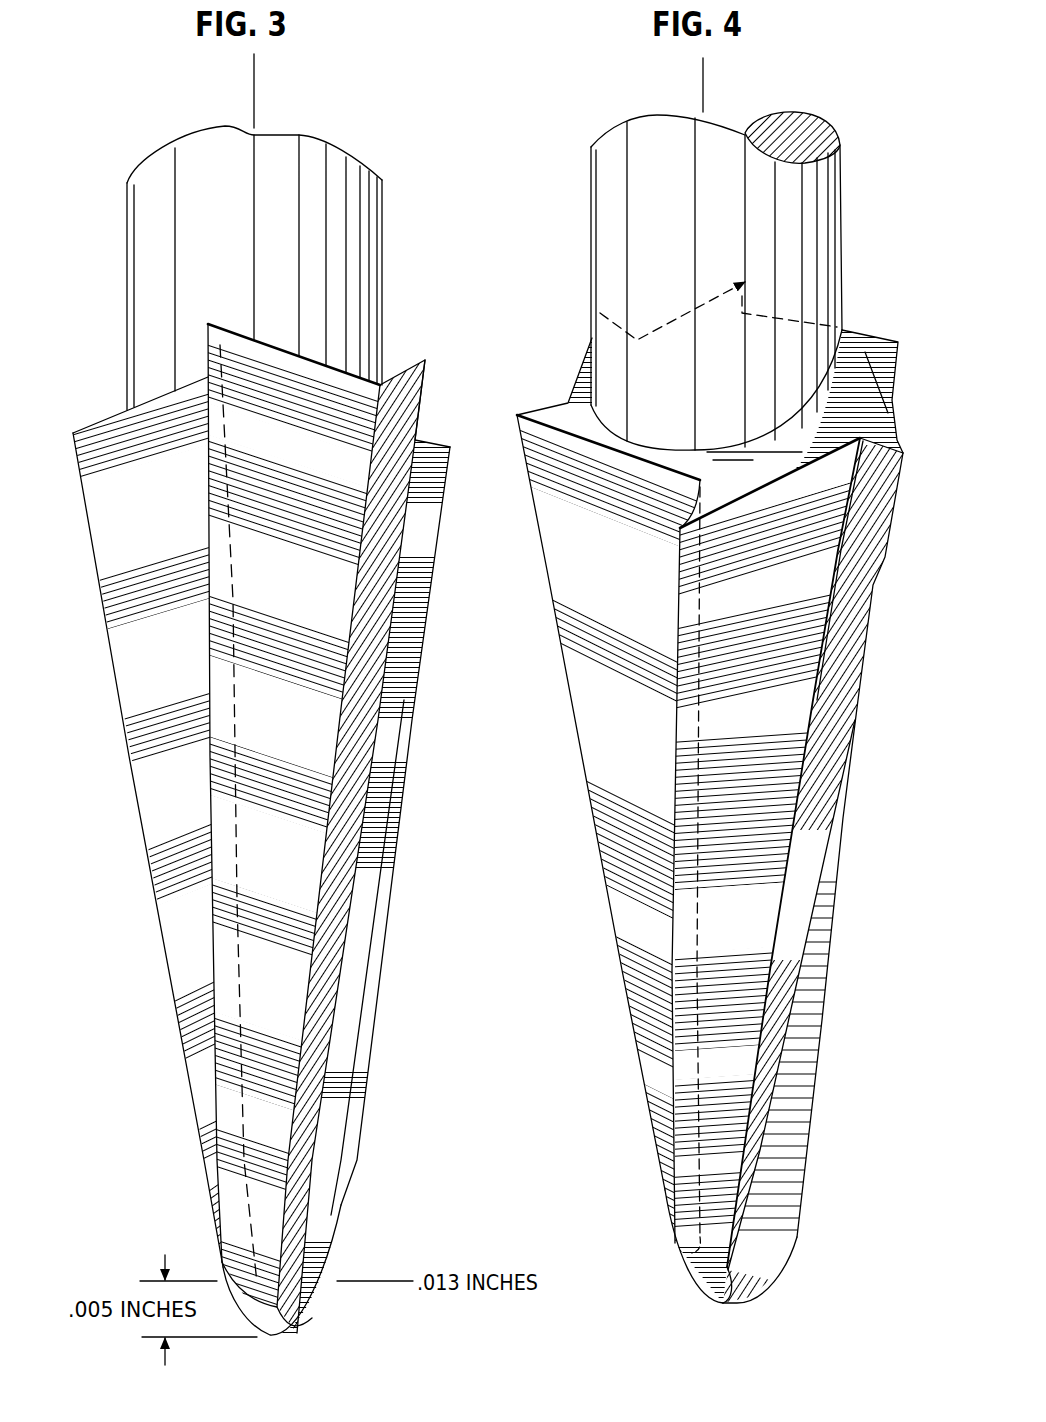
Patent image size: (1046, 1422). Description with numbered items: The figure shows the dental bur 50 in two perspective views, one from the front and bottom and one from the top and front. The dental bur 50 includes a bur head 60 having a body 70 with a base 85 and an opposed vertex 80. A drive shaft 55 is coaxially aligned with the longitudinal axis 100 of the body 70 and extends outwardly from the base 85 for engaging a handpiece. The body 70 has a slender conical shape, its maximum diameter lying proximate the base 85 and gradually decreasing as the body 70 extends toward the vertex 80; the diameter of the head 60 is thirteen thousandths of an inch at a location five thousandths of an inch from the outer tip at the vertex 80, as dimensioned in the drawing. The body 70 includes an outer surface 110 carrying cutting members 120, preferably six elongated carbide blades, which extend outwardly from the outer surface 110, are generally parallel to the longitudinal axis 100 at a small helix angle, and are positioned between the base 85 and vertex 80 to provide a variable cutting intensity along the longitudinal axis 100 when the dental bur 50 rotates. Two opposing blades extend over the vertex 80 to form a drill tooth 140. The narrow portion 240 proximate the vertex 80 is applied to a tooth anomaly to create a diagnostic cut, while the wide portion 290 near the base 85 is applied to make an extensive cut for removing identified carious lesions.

In FIG. 3, the dental bur 50 is at (403, 284).
In FIG. 4, the dental bur 50 is at (887, 323).
In FIG. 3, the drive shaft 55 is at (270, 178).
In FIG. 4, the drive shaft 55 is at (805, 235).
In FIG. 3, the bur head 60 is at (420, 876).
In FIG. 4, the bur head 60 is at (853, 843).
In FIG. 4, the body 70 is at (790, 705).
In FIG. 4, the vertex 80 is at (783, 1249).
In FIG. 4, the base 85 is at (890, 413).
In FIG. 3, the longitudinal axis 100 is at (254, 96).
In FIG. 4, the longitudinal axis 100 is at (703, 97).
In FIG. 3, the outer surface 110 is at (149, 404).
In FIG. 4, the outer surface 110 is at (783, 480).
In FIG. 3, the cutting members 120 is at (413, 590).
In FIG. 4, the cutting members 120 is at (847, 623).
In FIG. 3, the drill tooth 140 is at (322, 1313).
In FIG. 4, the drill tooth 140 is at (720, 1305).
In FIG. 3, the narrow portion 240 is at (193, 1160).
In FIG. 3, the wide portion 290 is at (71, 448).